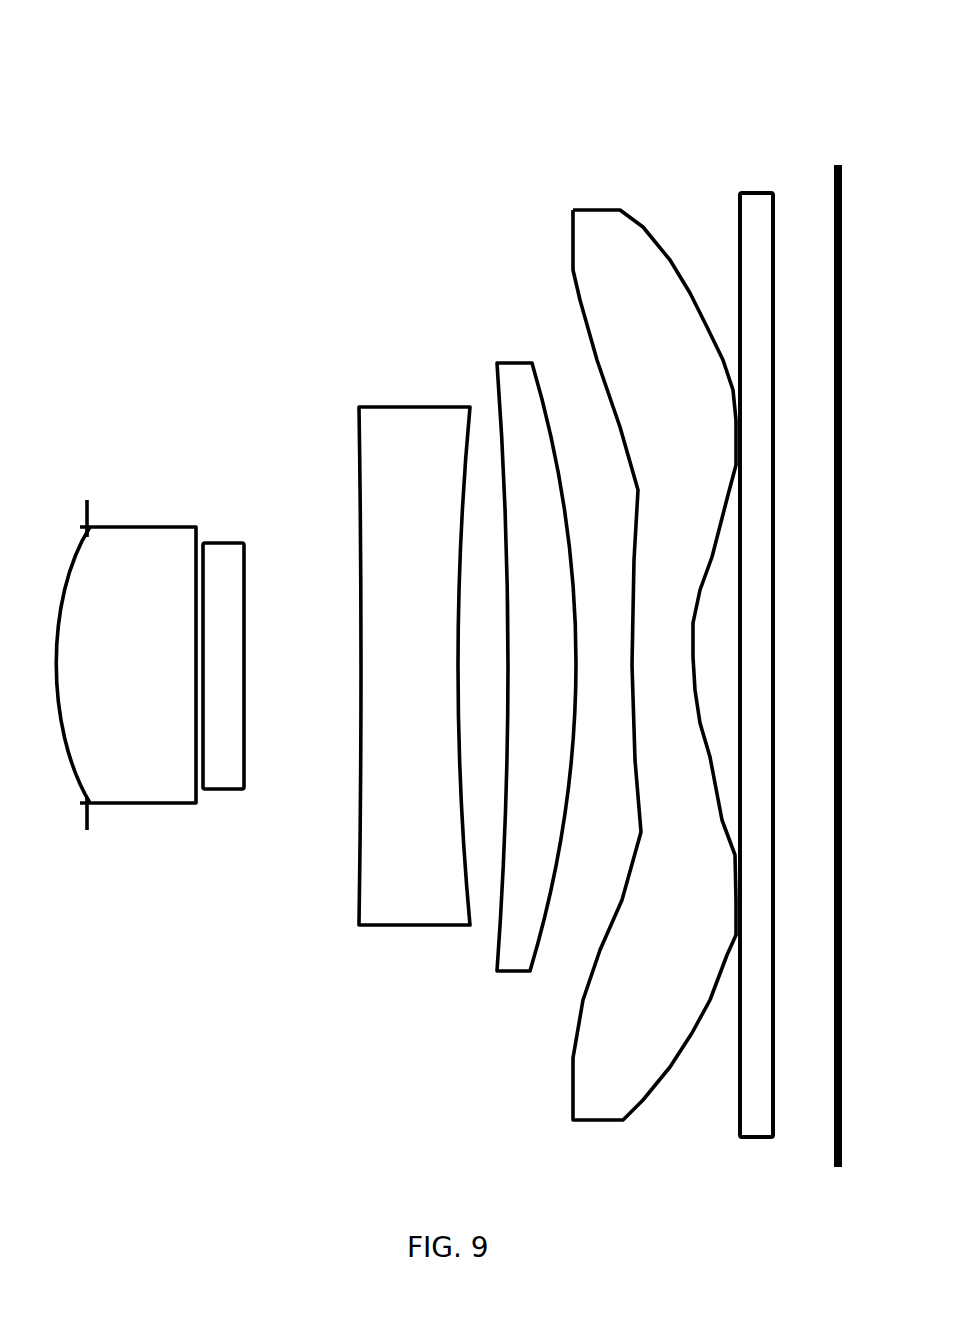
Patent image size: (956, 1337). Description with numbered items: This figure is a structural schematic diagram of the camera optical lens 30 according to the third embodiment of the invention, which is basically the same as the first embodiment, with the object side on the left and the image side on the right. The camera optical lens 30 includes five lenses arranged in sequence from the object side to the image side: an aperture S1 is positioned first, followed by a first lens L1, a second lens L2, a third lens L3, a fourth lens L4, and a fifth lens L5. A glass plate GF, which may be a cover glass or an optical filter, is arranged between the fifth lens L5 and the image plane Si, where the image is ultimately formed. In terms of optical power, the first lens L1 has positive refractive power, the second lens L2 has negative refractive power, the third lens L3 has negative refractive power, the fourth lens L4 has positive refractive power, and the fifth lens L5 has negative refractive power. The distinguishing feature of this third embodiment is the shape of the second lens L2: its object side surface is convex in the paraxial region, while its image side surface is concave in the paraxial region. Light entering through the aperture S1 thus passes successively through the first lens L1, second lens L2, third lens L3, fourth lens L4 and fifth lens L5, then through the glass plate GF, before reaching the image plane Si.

The camera optical lens 30 is at (467, 67).
The aperture S1 is at (86, 651).
The first lens L1 is at (126, 649).
The second lens L2 is at (223, 648).
The third lens L3 is at (414, 649).
The fourth lens L4 is at (536, 650).
The fifth lens L5 is at (654, 647).
The glass plate GF is at (755, 648).
The image plane Si is at (833, 649).